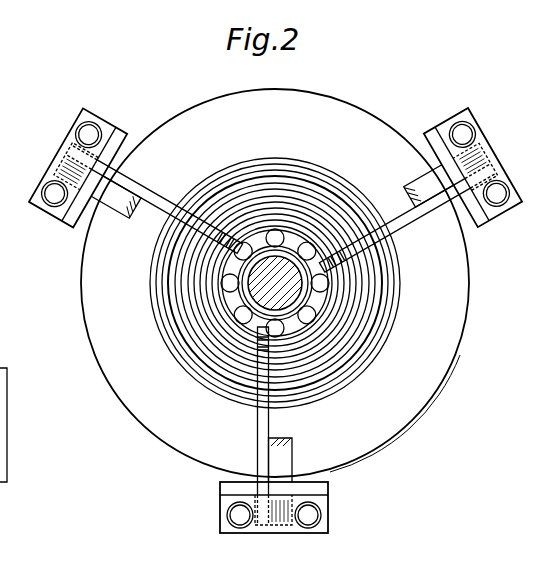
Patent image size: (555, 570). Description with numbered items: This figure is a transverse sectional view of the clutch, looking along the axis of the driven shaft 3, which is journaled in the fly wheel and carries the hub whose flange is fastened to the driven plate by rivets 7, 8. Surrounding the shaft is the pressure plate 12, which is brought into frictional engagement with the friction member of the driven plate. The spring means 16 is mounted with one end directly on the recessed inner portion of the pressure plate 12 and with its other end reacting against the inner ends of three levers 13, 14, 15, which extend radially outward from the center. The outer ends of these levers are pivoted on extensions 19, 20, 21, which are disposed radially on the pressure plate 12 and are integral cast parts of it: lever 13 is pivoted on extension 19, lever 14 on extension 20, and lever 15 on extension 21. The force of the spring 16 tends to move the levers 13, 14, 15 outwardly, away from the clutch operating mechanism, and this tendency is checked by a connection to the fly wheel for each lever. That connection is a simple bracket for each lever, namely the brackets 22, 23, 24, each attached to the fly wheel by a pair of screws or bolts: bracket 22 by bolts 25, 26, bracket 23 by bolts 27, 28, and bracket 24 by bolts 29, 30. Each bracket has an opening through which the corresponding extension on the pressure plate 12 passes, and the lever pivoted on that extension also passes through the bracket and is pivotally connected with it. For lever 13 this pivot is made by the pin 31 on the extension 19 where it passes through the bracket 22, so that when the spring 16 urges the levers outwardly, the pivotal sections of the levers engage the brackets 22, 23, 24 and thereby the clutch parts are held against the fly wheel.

The driven shaft 3 is at (258, 268).
The rivet 7 is at (308, 246).
The rivet 8 is at (270, 322).
The pressure plate 12 is at (288, 99).
The lever 13 is at (257, 420).
The lever 14 is at (158, 193).
The lever 15 is at (407, 222).
The spring means 16 is at (196, 302).
The extension 19 is at (292, 443).
The extension 20 is at (115, 210).
The extension 21 is at (424, 186).
The bracket 22 is at (328, 487).
The bracket 23 is at (118, 126).
The bracket 24 is at (488, 222).
The screw or bolt 25 is at (230, 511).
The screw or bolt 26 is at (320, 514).
The screw or bolt 27 is at (55, 196).
The screw or bolt 28 is at (92, 128).
The screw or bolt 29 is at (462, 132).
The screw or bolt 30 is at (492, 193).
The pin 31 is at (278, 523).